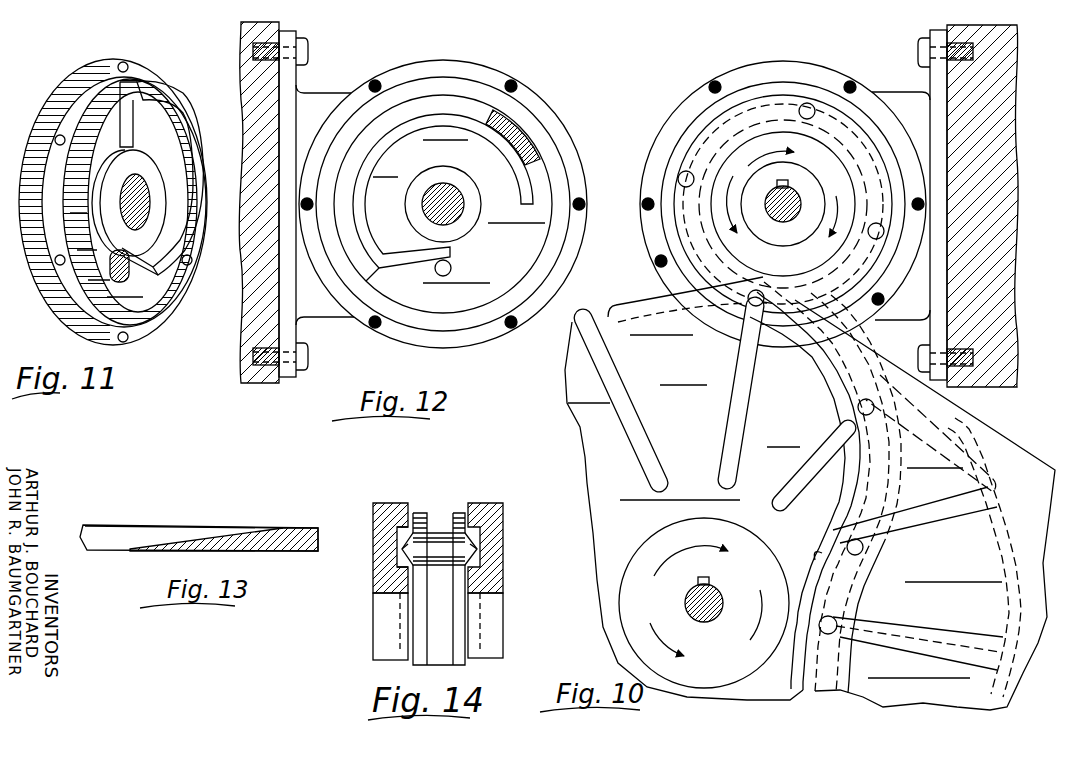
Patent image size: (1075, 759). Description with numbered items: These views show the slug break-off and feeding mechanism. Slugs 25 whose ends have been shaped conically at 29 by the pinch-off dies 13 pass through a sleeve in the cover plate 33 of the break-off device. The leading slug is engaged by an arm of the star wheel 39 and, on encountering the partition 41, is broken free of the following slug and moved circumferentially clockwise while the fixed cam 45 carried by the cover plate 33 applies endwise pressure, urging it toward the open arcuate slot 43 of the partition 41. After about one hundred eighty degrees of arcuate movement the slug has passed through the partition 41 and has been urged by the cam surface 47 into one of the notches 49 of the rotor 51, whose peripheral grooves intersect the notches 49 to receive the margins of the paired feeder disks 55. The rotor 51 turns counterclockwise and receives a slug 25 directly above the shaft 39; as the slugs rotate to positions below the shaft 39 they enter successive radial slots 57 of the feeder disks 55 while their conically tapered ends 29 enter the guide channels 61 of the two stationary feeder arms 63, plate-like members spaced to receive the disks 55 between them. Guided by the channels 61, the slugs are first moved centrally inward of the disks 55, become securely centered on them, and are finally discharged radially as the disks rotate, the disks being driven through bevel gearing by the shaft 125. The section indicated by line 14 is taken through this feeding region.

In FIG. 12, the pinch-off dies 13 is at (483, 107).
In FIG. 10, the section line 14- 14 is at (832, 284).
In FIG. 12, the slug 25 is at (452, 267).
In FIG. 10, the slug 25 is at (753, 307).
In FIG. 14, the slug 25 is at (443, 533).
In FIG. 14, the conical surface 29 is at (404, 552).
In FIG. 11, the cover plate 33 is at (157, 292).
In FIG. 12, the star wheel shaft 39 is at (460, 191).
In FIG. 10, the star wheel shaft 39 is at (793, 197).
In FIG. 12, the partition 41 is at (532, 246).
In FIG. 13, the partition 41 is at (287, 537).
In FIG. 12, the arcuate slot 43 is at (463, 105).
In FIG. 13, the arcuate slot 43 is at (105, 530).
In FIG. 11, the fixed cam 45 is at (187, 107).
In FIG. 13, the cam surface 47 is at (200, 538).
In FIG. 10, the notches 49 is at (804, 103).
In FIG. 10, the rotor 51 is at (752, 102).
In FIG. 10, the feeder disks 55 is at (637, 305).
In FIG. 14, the feeder disks 55 is at (425, 515).
In FIG. 10, the radial slots 57 is at (730, 384).
In FIG. 14, the radial slots 57 is at (423, 610).
In FIG. 10, the guide channels 61 is at (837, 394).
In FIG. 14, the guide channels 61 is at (400, 540).
In FIG. 10, the feeder arms 63 is at (857, 477).
In FIG. 14, the feeder arms 63 is at (382, 518).
In FIG. 10, the shaft 125 is at (708, 620).